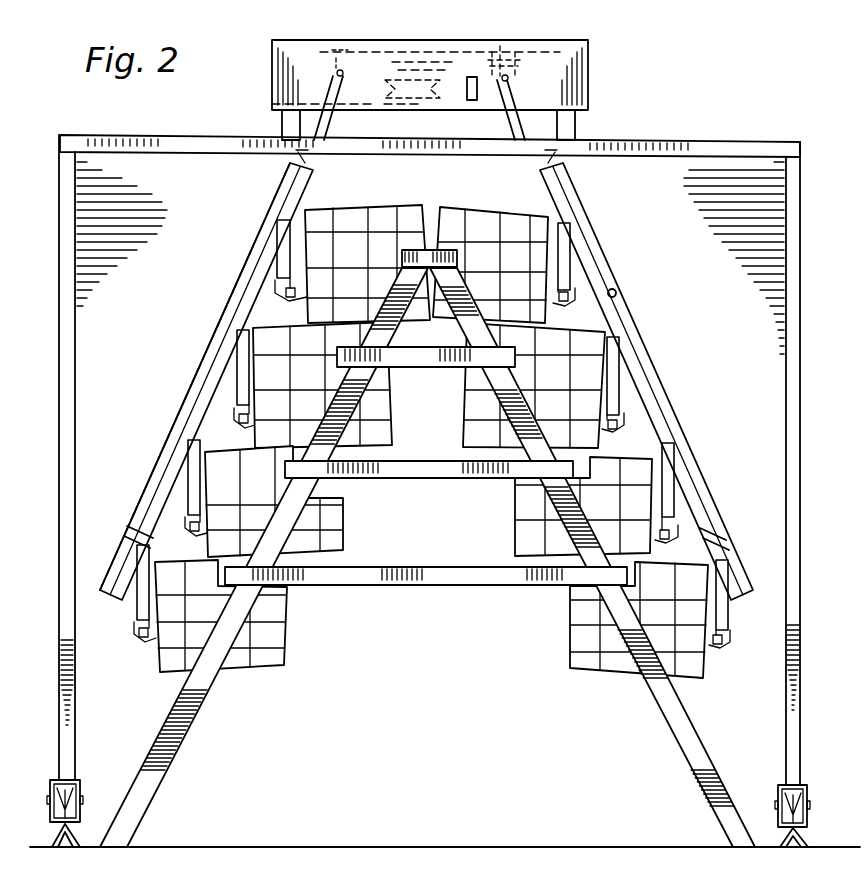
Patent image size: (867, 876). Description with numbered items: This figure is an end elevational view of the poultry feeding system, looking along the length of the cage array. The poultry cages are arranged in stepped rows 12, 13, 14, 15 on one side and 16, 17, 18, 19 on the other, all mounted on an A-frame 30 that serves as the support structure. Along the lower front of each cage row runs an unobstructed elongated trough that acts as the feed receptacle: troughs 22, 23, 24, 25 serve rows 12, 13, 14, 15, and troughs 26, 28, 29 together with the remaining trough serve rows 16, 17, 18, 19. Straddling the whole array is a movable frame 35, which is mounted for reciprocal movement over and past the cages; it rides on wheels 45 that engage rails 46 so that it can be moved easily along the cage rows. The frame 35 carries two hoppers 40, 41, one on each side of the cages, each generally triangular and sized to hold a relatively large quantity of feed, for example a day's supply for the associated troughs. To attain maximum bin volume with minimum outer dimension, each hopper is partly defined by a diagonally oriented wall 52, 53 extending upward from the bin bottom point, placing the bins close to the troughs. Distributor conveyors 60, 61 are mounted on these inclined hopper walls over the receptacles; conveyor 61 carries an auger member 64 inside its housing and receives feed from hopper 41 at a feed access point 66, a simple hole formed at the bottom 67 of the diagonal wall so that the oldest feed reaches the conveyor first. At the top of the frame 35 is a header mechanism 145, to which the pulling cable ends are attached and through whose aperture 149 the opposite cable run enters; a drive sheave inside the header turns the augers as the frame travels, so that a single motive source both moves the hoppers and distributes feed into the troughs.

The header mechanism 145 is at (305, 60).
The aperture 149 is at (471, 77).
The screw or auger member 64 is at (330, 124).
The feed access point 66 is at (522, 124).
The movable frame 35 is at (592, 140).
The hopper 41 is at (133, 334).
The hopper 40 is at (713, 310).
The distributor conveyor 61 is at (270, 250).
The diagonally oriented wall 53 is at (238, 292).
The hopper bottom 67 is at (97, 600).
The distributor conveyor 60 is at (578, 208).
The diagonally oriented wall 52 is at (616, 290).
The elongated trough 26 is at (275, 295).
The elongated trough 22 is at (234, 418).
The elongated trough 28 is at (186, 530).
The elongated trough 29 is at (134, 641).
The elongated trough 23 is at (624, 426).
The elongated trough 24 is at (678, 536).
The elongated trough 25 is at (729, 645).
The cage row 16 is at (362, 275).
The cage row 12 is at (515, 280).
The cage row 17 is at (310, 395).
The cage row 13 is at (573, 396).
The cage row 18 is at (262, 516).
The cage row 14 is at (630, 511).
The cage row 19 is at (210, 621).
The cage row 15 is at (675, 618).
The A-frame 30 is at (458, 590).
The wheels 45 is at (82, 797).
The rails 46 is at (82, 832).